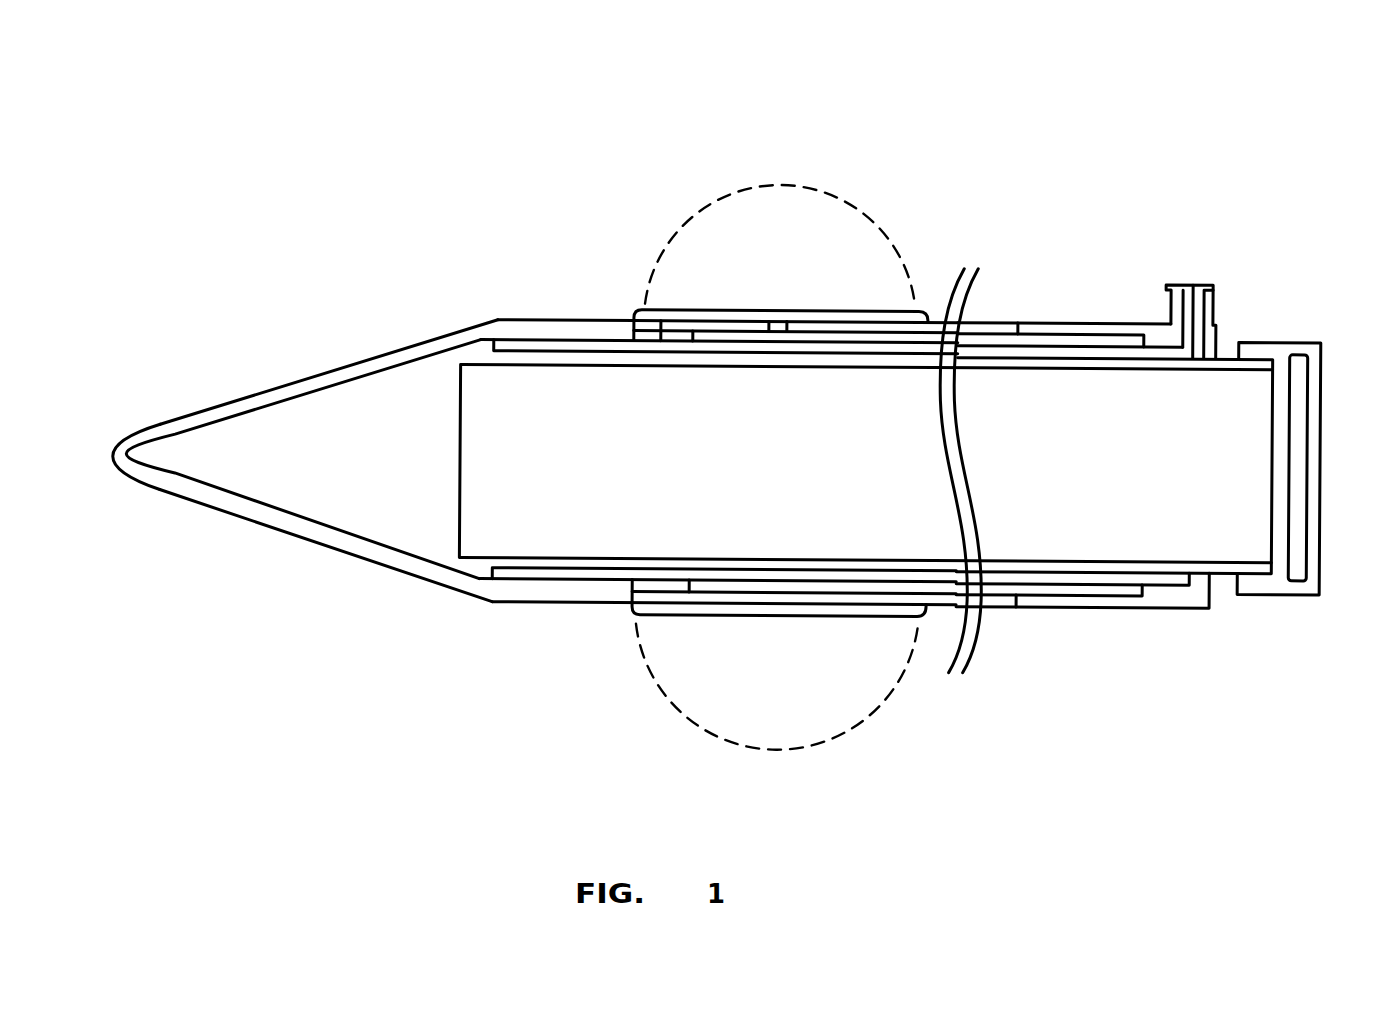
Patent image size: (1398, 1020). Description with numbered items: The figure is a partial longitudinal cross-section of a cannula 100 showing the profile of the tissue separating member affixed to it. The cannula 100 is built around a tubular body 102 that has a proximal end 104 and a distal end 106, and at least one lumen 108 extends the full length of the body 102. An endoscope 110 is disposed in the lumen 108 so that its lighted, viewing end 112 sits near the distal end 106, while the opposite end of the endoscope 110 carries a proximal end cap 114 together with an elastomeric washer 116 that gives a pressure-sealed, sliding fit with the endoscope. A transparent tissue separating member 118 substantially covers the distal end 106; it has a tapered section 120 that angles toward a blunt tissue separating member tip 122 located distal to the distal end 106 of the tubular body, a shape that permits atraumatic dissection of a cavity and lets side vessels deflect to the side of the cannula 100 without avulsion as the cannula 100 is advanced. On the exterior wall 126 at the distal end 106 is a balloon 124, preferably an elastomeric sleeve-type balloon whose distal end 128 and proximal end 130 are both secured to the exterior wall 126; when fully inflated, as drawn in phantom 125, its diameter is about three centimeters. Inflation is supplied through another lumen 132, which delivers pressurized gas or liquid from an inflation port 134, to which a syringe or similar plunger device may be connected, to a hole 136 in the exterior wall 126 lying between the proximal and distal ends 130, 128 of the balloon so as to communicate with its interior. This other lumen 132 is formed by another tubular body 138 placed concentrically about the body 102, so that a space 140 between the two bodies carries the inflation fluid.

The cannula 100 is at (443, 178).
The tubular body 102 is at (1037, 596).
The proximal end 104 is at (1324, 459).
The distal end 106 is at (484, 350).
The lumen 108 is at (465, 577).
The endoscope 110 is at (566, 532).
The lighted, viewing end 112 is at (460, 434).
The proximal end cap 114 is at (1309, 601).
The elastomeric washer 116 is at (1279, 583).
The tissue separating member 118 is at (509, 308).
The tapered section 120 is at (293, 540).
The tissue separating member tip 122 is at (113, 457).
The balloon 124 is at (680, 311).
The detail region lower 125 is at (825, 752).
The exterior wall 126 is at (980, 321).
The distal end of the balloon 128 is at (634, 614).
The proximal end of the balloon 130 is at (932, 620).
The other lumen 132 is at (700, 332).
The inflation port 134 is at (1189, 283).
The hole 136 is at (776, 326).
The another tubular body 138 is at (1040, 321).
The space 140 is at (660, 340).